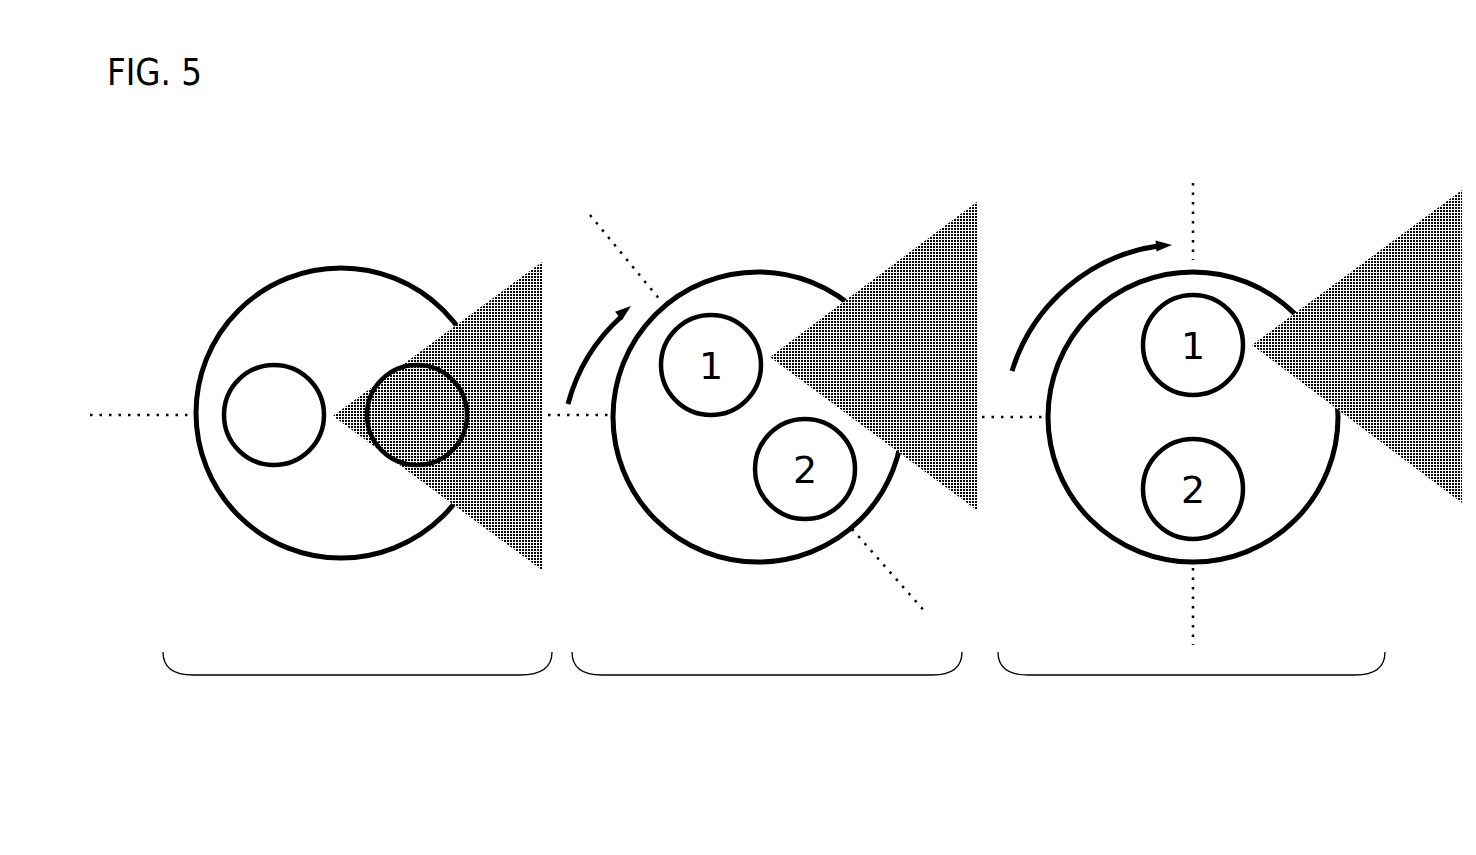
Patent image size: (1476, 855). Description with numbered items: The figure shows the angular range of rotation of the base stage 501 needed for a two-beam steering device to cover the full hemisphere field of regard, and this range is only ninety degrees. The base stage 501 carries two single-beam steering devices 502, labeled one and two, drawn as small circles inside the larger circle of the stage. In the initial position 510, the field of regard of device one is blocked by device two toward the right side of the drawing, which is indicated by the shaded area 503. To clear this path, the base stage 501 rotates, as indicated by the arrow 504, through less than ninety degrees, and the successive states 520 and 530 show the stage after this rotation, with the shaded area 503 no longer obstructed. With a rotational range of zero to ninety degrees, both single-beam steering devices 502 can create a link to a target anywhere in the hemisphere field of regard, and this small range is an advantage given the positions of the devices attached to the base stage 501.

The base stage 501 is at (270, 290).
The single-beam steering devices 502 is at (405, 467).
The shaded area 503 is at (482, 289).
The rotation of the base stage 504 is at (597, 345).
The initial position 510 is at (357, 697).
The intermediate rotated position 520 is at (767, 697).
The further rotated position 530 is at (1191, 697).